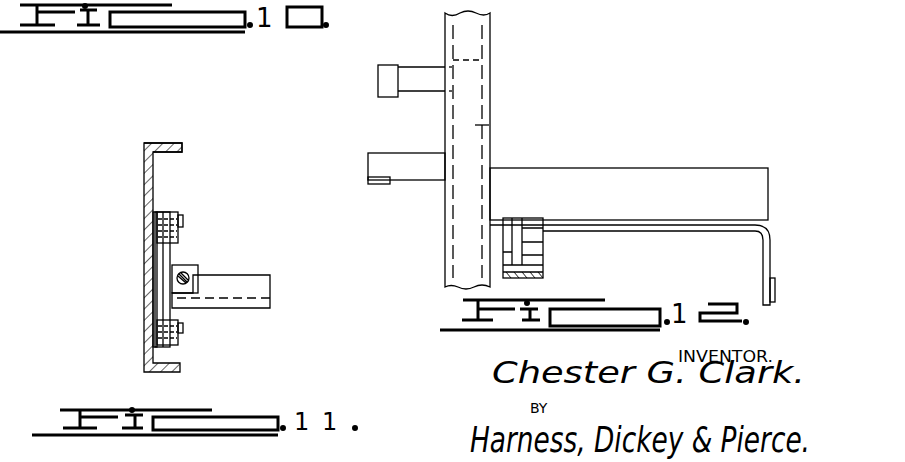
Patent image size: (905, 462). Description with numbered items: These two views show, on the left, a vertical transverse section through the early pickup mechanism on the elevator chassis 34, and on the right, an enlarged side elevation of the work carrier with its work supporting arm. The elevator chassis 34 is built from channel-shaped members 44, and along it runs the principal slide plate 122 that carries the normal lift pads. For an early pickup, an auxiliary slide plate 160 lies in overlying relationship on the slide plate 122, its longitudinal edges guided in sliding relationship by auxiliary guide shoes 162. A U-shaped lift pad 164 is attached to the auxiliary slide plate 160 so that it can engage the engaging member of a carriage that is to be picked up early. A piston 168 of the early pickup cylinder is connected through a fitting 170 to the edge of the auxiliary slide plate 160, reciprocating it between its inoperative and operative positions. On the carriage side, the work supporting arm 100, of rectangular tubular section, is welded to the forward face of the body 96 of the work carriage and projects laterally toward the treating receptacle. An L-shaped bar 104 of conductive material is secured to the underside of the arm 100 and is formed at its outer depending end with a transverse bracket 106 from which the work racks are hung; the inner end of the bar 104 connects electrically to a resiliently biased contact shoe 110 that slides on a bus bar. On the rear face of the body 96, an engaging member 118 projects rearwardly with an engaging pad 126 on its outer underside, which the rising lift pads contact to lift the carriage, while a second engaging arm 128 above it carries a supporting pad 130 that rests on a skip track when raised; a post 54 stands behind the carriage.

In FIG. 11, the elevator chassis 34 is at (140, 178).
In FIG. 11, the channel-shaped member 44 is at (153, 167).
In FIG. 11, the slide plate 122 is at (160, 228).
In FIG. 11, the auxiliary slide plate 160 is at (177, 257).
In FIG. 11, the auxiliary guide shoes 162 is at (180, 222).
In FIG. 11, the U-shaped lift pad 164 is at (270, 300).
In FIG. 11, the piston 168 is at (198, 277).
In FIG. 11, the fitting 170 is at (192, 297).
In FIG. 12, the post 54 is at (480, 32).
In FIG. 12, the body 96 is at (497, 117).
In FIG. 12, the work supporting arm 100 is at (640, 178).
In FIG. 12, the L-shaped bar 104 is at (685, 226).
In FIG. 12, the transverse bracket 106 is at (775, 298).
In FIG. 12, the contact shoe 110 is at (545, 277).
In FIG. 12, the engaging member 118 is at (422, 133).
In FIG. 12, the engaging pad 126 is at (378, 186).
In FIG. 12, the second engaging arm 128 is at (395, 67).
In FIG. 12, the supporting pad 130 is at (383, 96).